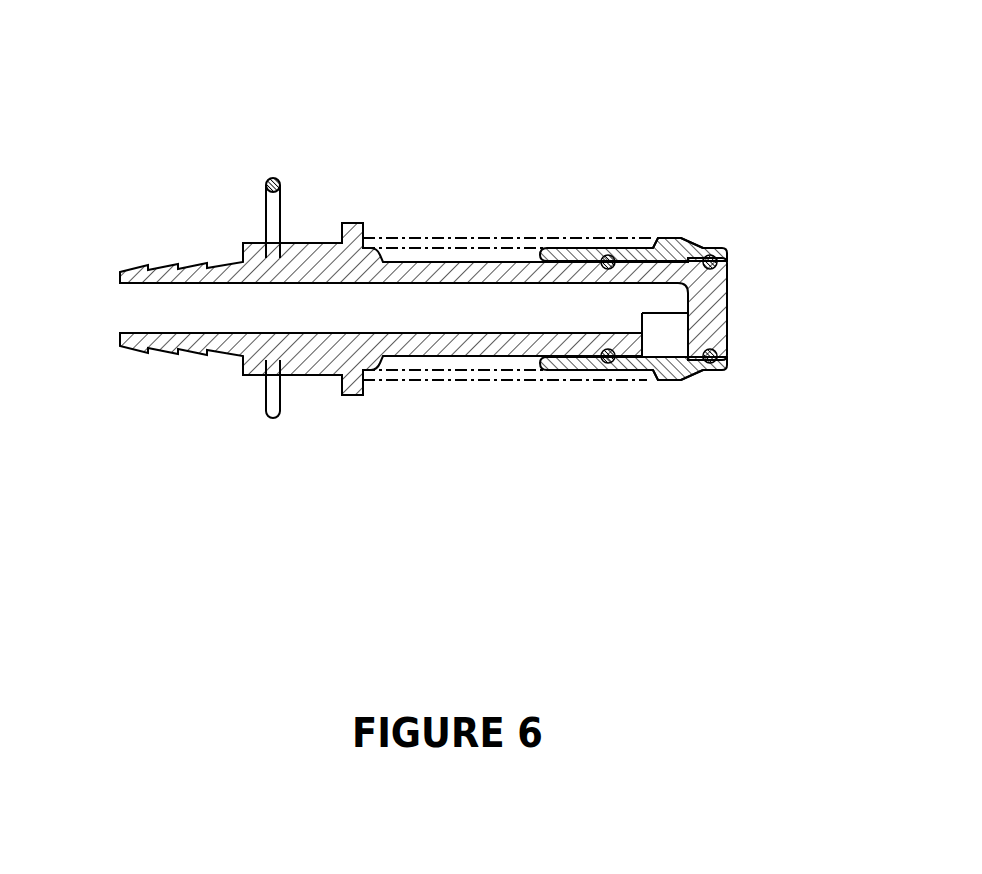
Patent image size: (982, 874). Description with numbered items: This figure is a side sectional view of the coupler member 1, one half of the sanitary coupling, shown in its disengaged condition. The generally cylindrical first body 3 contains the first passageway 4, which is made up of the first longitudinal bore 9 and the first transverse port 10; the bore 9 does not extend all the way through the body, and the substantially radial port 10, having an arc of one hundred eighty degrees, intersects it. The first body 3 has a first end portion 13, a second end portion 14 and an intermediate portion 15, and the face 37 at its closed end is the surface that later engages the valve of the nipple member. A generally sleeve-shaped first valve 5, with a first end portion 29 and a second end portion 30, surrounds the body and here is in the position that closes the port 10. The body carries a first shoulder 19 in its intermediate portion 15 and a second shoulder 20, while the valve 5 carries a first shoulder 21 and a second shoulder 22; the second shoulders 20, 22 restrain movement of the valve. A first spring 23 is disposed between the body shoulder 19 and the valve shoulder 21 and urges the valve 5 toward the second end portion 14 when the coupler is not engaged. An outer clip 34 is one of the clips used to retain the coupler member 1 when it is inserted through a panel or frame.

The coupler member 1 is at (203, 265).
The first body 3 is at (415, 266).
The first passageway 4 is at (420, 320).
The first valve 5 is at (670, 238).
The first longitudinal bore 9 is at (500, 283).
The first transverse port 10 is at (670, 330).
The first end portion 13 is at (119, 325).
The second end portion 14 is at (733, 337).
The intermediate portion 15 is at (347, 223).
The first shoulder 19 is at (372, 222).
The second shoulder 20 is at (550, 245).
The first shoulder 21 is at (652, 243).
The second shoulder 22 is at (557, 247).
The first spring 23 is at (455, 378).
The first end portion 29 is at (552, 372).
The second end portion 30 is at (720, 367).
The outer clip 34 is at (270, 210).
The face 37 is at (729, 268).